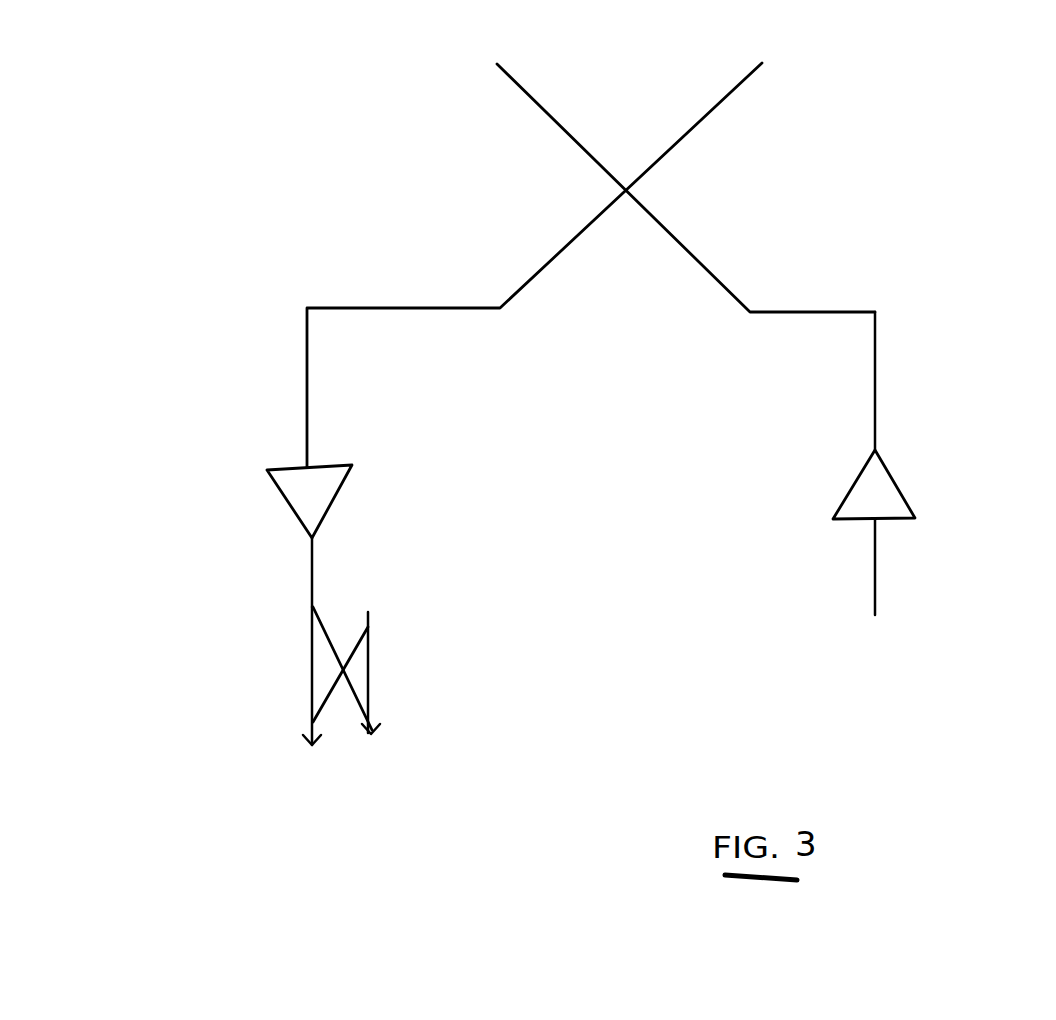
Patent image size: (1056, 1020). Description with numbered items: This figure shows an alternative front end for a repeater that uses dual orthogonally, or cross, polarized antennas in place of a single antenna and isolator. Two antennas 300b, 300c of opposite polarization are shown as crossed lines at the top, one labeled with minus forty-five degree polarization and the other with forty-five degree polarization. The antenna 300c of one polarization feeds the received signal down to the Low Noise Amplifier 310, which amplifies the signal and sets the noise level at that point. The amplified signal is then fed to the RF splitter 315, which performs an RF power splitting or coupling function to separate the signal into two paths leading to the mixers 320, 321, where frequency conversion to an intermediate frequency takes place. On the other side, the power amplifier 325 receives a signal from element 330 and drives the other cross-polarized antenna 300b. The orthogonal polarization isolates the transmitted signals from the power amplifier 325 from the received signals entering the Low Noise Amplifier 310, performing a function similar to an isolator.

The cross-polarized antenna 300b is at (527, 108).
The cross-polarized antenna 300c is at (738, 103).
The Low Noise Amplifier 310 is at (297, 490).
The RF splitter 315 is at (387, 632).
The mixer 320 is at (296, 759).
The mixer 321 is at (420, 741).
The power amplifier 325 is at (878, 485).
The input source 330 is at (911, 591).